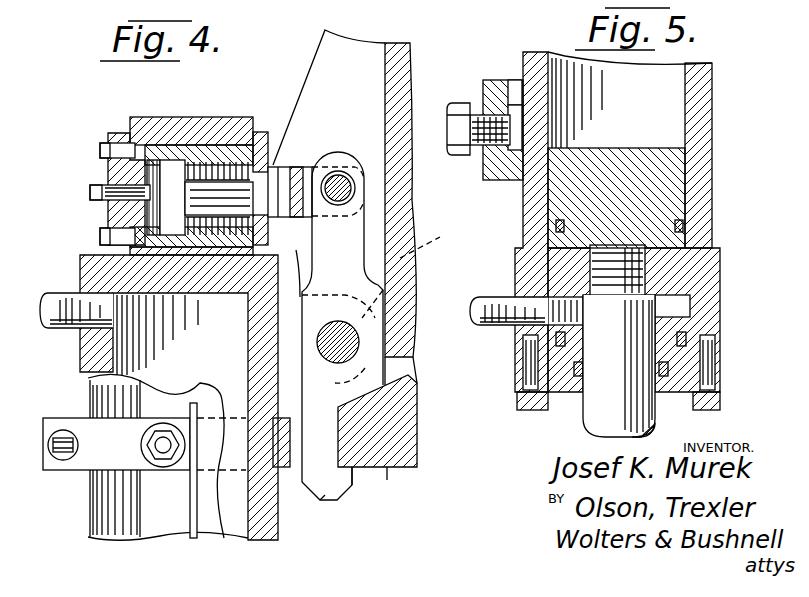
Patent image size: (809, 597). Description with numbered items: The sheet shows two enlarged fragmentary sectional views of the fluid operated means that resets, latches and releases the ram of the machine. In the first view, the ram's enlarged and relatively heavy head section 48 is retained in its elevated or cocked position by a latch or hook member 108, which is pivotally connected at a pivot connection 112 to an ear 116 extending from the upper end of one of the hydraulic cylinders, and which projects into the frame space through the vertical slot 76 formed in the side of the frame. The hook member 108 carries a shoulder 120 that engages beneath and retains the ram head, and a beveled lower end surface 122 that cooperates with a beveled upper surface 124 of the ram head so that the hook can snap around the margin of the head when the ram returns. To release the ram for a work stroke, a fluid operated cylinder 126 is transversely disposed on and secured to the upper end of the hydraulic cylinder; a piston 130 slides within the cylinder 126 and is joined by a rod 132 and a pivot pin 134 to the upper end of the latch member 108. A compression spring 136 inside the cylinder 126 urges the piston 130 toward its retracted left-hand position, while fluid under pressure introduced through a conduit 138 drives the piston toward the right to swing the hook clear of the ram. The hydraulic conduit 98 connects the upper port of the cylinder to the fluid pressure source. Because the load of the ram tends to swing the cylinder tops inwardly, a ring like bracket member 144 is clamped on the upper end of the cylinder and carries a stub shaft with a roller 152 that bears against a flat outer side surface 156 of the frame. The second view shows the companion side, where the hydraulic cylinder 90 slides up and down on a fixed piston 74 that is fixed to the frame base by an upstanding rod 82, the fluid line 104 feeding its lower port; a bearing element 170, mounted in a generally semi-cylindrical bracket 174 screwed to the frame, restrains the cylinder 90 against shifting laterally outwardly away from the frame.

In FIG. 4, the head section 48 is at (400, 437).
In FIG. 5, the fixed piston 74 is at (665, 178).
In FIG. 4, the vertical slot 76 is at (390, 60).
In FIG. 5, the upstanding rod 82 is at (605, 425).
In FIG. 5, the hydraulic cylinder 90 is at (705, 112).
In FIG. 4, the hydraulic conduit 98 is at (53, 300).
In FIG. 5, the fluid line 104 is at (497, 318).
In FIG. 4, the latch or hook member 108 is at (381, 240).
In FIG. 4, the pivot connection 112 is at (352, 340).
In FIG. 4, the ear 116 is at (379, 261).
In FIG. 4, the shoulder 120 is at (387, 470).
In FIG. 4, the beveled lower end surface 122 is at (345, 500).
In FIG. 4, the beveled upper surface 124 is at (410, 382).
In FIG. 4, the fluid operated cylinder 126 is at (140, 117).
In FIG. 4, the piston 130 is at (165, 180).
In FIG. 4, the rod 132 is at (292, 160).
In FIG. 4, the pivot pin 134 is at (338, 172).
In FIG. 4, the compression spring 136 is at (207, 145).
In FIG. 4, the conduit 138 is at (100, 182).
In FIG. 4, the ring like bracket member 144 is at (128, 457).
In FIG. 4, the roller 152 is at (163, 468).
In FIG. 4, the flat outer side surface 156 is at (190, 527).
In FIG. 5, the bearing element 170 is at (512, 100).
In FIG. 5, the semi-cylindrical bracket 174 is at (490, 88).